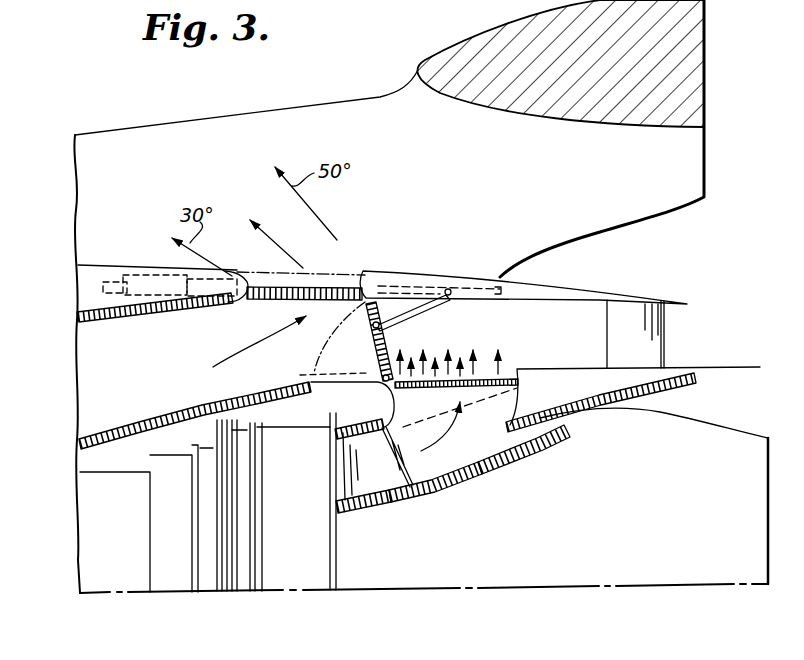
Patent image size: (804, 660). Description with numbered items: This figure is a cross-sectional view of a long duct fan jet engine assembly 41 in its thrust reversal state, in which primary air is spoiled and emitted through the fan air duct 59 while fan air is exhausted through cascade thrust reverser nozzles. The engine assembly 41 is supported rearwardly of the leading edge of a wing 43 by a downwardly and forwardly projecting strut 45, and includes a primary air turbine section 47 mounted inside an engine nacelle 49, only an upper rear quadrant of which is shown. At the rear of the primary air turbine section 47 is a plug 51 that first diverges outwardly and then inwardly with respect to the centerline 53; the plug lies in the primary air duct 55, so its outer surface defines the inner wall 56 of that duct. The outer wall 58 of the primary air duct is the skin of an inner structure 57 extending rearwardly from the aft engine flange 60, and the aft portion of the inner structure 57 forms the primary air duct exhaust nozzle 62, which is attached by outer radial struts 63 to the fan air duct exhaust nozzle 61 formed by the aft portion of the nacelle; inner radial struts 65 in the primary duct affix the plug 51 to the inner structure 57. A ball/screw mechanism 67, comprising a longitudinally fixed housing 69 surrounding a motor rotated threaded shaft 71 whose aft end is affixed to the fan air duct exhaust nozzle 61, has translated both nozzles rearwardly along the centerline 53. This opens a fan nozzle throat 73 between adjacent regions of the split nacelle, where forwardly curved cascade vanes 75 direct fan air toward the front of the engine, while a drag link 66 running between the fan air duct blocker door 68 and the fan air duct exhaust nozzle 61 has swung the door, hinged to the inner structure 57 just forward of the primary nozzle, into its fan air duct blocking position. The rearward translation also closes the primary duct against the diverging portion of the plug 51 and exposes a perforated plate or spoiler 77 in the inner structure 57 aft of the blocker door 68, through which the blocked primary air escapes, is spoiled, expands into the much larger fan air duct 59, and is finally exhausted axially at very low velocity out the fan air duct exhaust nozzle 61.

The long duct fan jet engine assembly 41 is at (583, 272).
The wing 43 is at (500, 26).
The strut 45 is at (326, 106).
The primary air turbine section 47 is at (210, 563).
The engine nacelle 49 is at (122, 252).
The plug 51 is at (686, 427).
The centerline 53 is at (396, 589).
The primary air duct 55 is at (522, 450).
The inner wall of primary air duct 56 is at (437, 481).
The inner structure 57 is at (320, 412).
The outer wall of primary air duct 58 is at (355, 438).
The fan air duct 59 is at (190, 356).
The aft engine flange 60 is at (324, 445).
The fan air duct exhaust nozzle 61 is at (403, 277).
The primary air duct exhaust nozzle 62 is at (135, 438).
The outer radial struts 63 is at (660, 336).
The inner radial struts 65 is at (376, 493).
The drag link 66 is at (450, 302).
The ball/screw mechanism 67 is at (197, 280).
The fan air duct blocker door 68 is at (388, 340).
The housing 69 is at (150, 300).
The threaded shaft 71 is at (225, 302).
The fan nozzle throat 73 is at (320, 271).
The cascade vanes 75 is at (268, 300).
The perforated plate or spoiler 77 is at (500, 372).